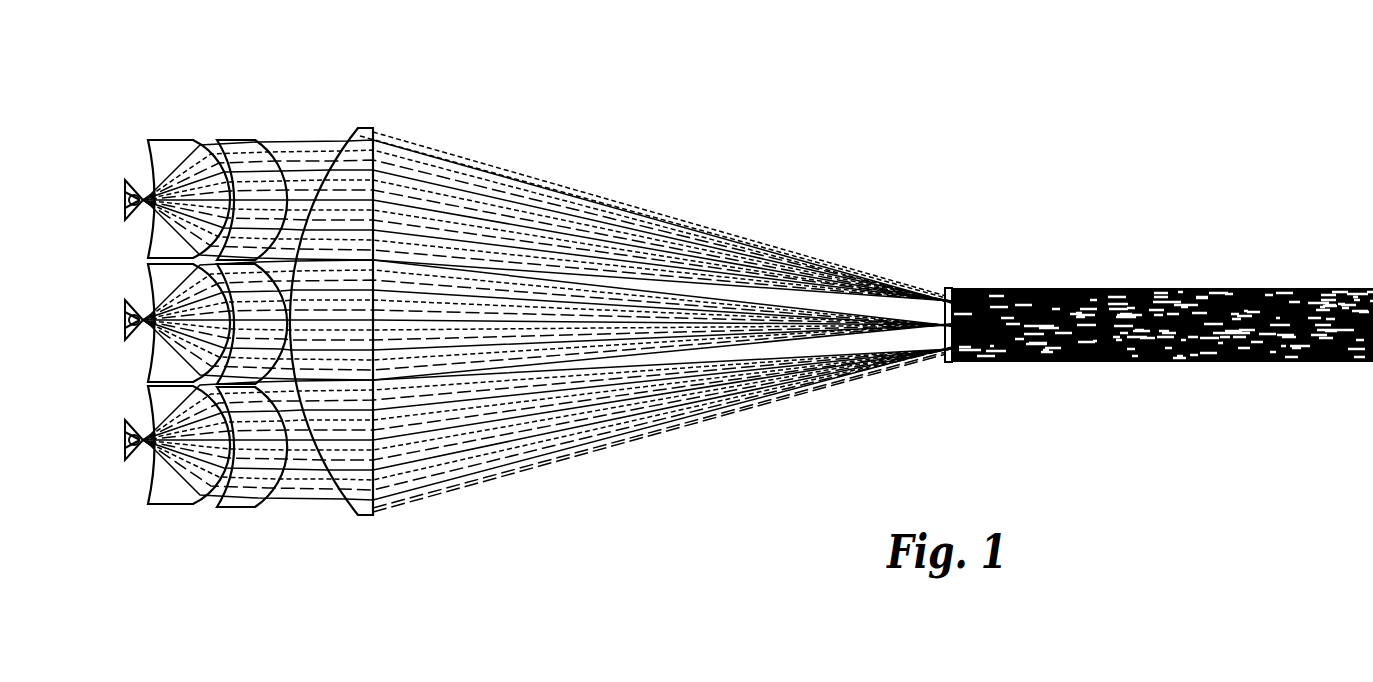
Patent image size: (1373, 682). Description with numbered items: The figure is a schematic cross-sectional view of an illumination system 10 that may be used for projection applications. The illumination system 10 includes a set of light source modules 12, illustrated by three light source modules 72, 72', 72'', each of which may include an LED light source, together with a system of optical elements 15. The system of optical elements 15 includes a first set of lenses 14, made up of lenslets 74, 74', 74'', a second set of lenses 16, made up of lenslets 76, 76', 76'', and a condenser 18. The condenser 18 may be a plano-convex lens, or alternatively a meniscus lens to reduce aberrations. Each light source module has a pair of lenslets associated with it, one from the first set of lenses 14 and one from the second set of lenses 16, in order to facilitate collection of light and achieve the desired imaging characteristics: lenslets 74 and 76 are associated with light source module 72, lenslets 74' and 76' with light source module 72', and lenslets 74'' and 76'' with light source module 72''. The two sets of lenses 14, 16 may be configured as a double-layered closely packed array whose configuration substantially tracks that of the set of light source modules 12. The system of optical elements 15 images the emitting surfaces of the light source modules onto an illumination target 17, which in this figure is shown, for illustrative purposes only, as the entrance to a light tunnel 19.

The illumination system 10 is at (568, 90).
The set of light source modules 12 is at (128, 158).
The first set of lenses 14 is at (163, 526).
The system of optical elements 15 is at (143, 82).
The second set of lenses 16 is at (230, 526).
The illumination target 17 is at (962, 305).
The condenser 18 is at (356, 497).
The light tunnel 19 is at (1201, 268).
The light source module 72 is at (98, 193).
The light source module 72' is at (95, 314).
The light source module 72'' is at (94, 436).
The lenslet 74 is at (188, 171).
The lenslet 74' is at (155, 315).
The lenslet 74'' is at (154, 437).
The lenslet 76 is at (252, 170).
The lenslet 76' is at (284, 230).
The lenslet 76'' is at (269, 480).